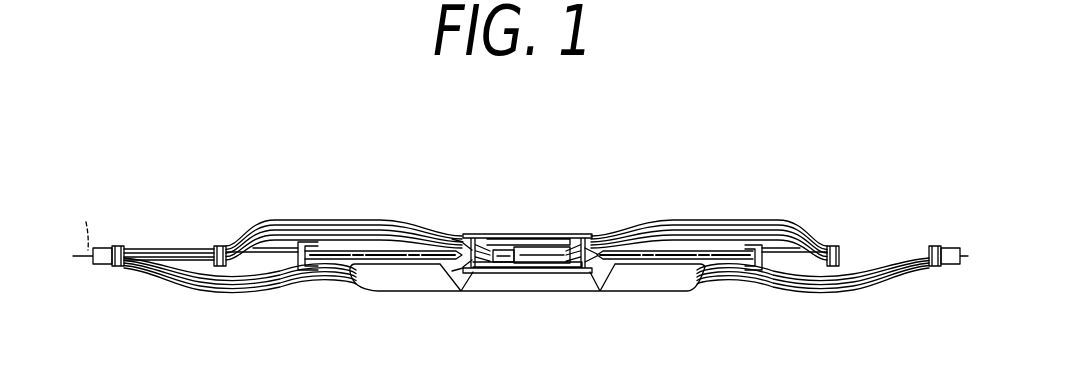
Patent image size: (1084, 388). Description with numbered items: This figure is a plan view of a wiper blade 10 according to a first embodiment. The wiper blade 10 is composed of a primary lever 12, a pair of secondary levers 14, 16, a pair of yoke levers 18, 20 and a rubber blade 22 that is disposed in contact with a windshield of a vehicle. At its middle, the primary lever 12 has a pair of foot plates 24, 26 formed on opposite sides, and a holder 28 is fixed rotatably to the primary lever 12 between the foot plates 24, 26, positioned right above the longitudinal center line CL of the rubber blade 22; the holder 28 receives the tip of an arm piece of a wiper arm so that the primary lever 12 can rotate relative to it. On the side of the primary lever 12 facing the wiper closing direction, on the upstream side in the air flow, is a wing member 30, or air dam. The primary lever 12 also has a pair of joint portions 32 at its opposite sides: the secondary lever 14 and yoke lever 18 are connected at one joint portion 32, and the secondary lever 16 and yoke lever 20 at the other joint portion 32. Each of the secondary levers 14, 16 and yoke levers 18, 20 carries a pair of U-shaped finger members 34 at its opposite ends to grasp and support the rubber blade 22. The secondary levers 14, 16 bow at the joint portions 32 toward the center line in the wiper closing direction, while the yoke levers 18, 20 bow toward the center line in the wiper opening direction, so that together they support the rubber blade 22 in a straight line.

The wiper blade 10 is at (630, 163).
The primary lever 12 is at (643, 251).
The secondary lever 14 is at (368, 225).
The secondary lever 16 is at (700, 220).
The yoke lever 18 is at (238, 288).
The yoke lever 20 is at (840, 287).
The rubber blade 22 is at (183, 248).
The foot plate 24 is at (513, 235).
The foot plate 26 is at (494, 271).
The holder 28 is at (527, 271).
The wing member 30 is at (580, 287).
The joint portion 32 is at (293, 268).
The U-shaped finger member 34 is at (222, 246).